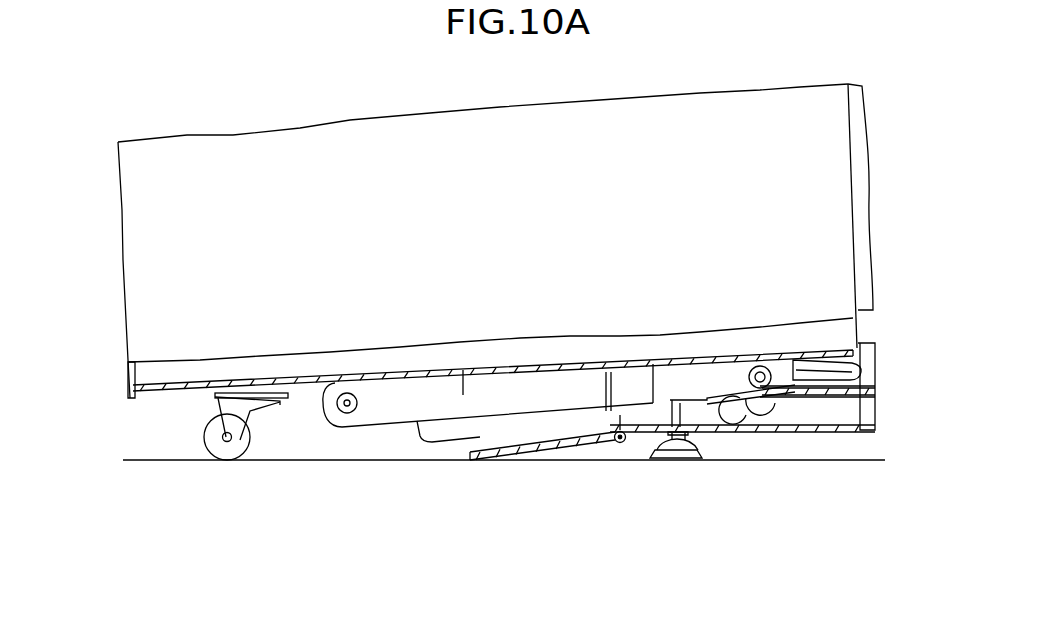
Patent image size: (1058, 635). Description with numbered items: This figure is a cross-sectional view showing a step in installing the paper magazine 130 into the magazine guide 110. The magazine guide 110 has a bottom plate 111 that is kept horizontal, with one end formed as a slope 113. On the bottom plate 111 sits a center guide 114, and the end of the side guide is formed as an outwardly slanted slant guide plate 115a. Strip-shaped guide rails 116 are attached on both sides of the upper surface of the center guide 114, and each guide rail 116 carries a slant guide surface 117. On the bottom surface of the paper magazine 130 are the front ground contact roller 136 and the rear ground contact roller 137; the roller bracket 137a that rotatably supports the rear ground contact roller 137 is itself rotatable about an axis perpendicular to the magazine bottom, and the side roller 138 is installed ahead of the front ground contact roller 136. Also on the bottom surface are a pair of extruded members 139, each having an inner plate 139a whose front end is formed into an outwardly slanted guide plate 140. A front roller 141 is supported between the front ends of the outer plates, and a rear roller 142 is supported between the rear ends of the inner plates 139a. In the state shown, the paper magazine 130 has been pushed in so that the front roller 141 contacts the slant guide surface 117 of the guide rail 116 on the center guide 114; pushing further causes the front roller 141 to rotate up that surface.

The magazine guide 110 is at (768, 441).
The bottom plate 111 is at (810, 433).
The slope 113 is at (540, 452).
The center guide 114 is at (862, 432).
The slant guide plate 115a is at (480, 437).
The guide rail 116 is at (863, 363).
The slant guide surface 117 is at (740, 400).
The paper magazine 130 is at (118, 142).
The front ground contact roller 136 is at (720, 437).
The rear ground contact roller 137 is at (210, 445).
The roller bracket 137a is at (243, 417).
The side roller 138 is at (803, 368).
The extruded member 139 is at (405, 352).
The inner plate 139a is at (463, 375).
The guide plate 140 is at (623, 387).
The front roller 141 is at (755, 366).
The rear roller 142 is at (340, 388).